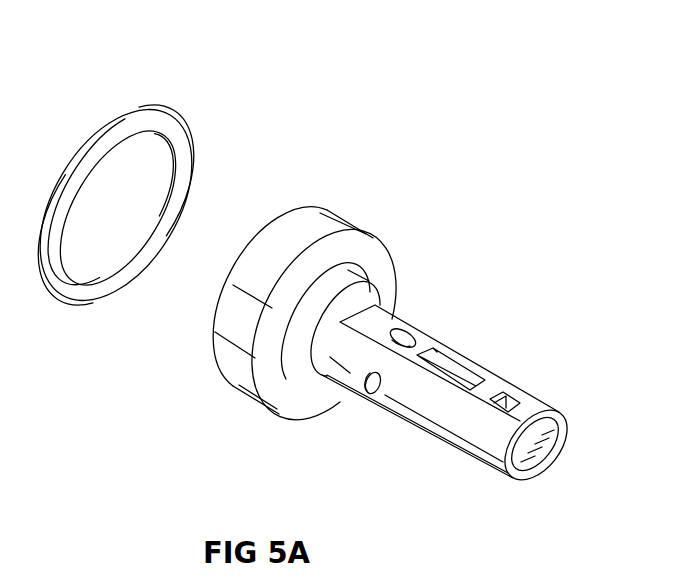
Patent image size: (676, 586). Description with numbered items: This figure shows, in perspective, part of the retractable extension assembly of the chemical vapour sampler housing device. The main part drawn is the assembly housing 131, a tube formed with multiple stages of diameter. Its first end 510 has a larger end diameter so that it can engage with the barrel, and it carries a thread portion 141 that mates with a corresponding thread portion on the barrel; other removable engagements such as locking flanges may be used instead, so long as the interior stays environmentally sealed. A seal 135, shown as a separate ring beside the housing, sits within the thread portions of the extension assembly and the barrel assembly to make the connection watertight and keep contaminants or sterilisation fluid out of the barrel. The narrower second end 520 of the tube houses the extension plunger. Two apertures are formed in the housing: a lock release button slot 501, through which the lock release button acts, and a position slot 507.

The seal 135 is at (90, 141).
The thread portion 141 is at (262, 231).
The first end 510 is at (245, 370).
The assembly housing 131 is at (367, 252).
The lock release button slot 501 is at (450, 368).
The position slot 507 is at (494, 407).
The second end 520 is at (552, 458).